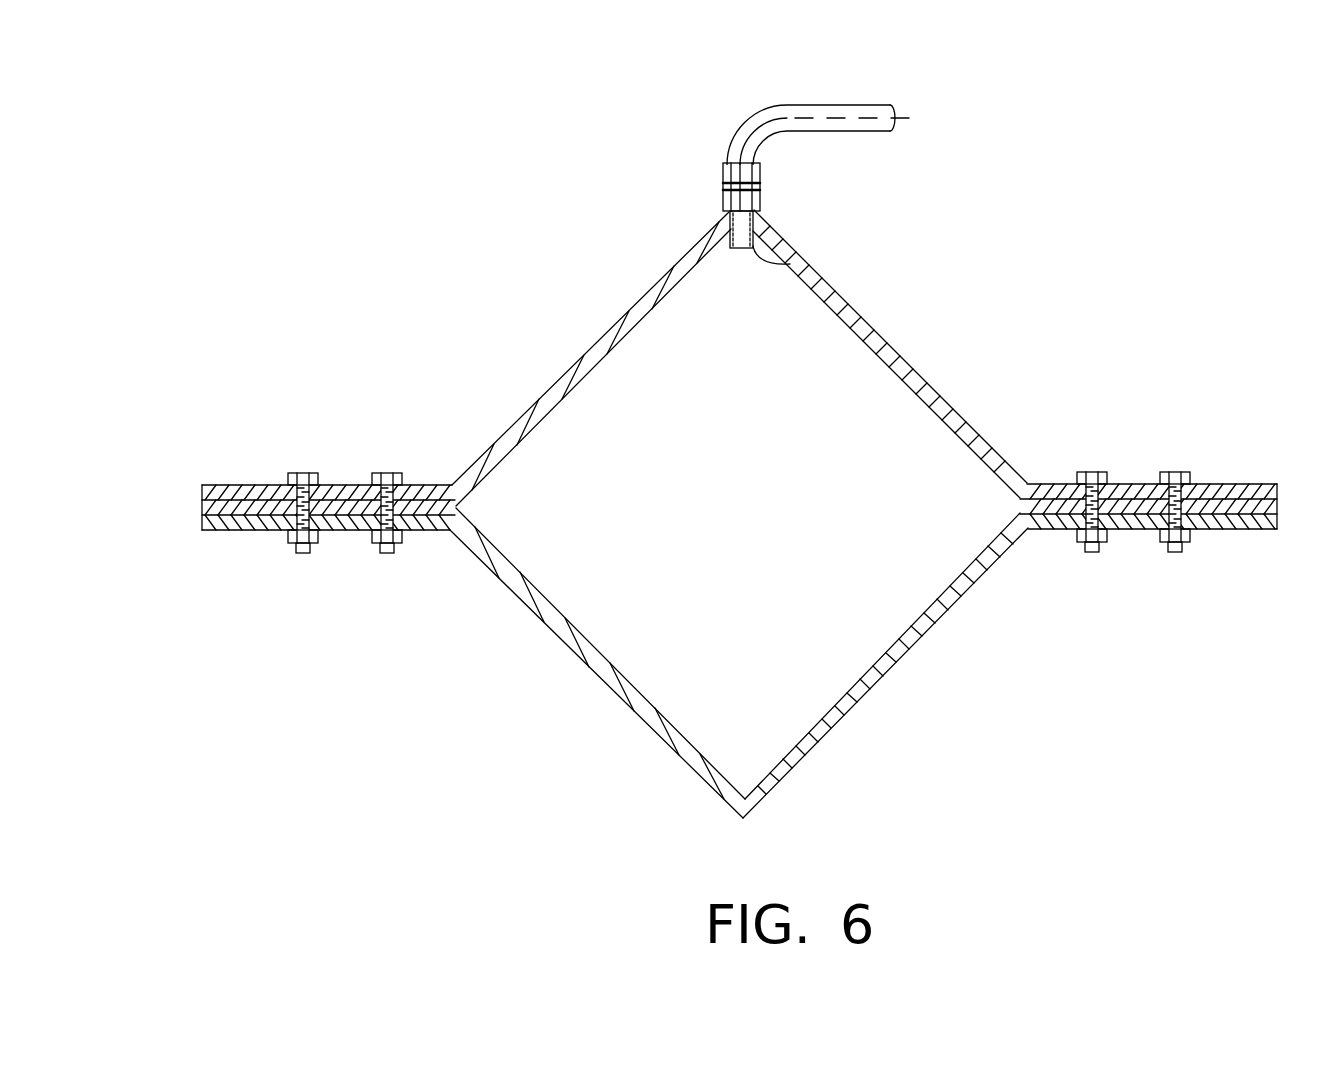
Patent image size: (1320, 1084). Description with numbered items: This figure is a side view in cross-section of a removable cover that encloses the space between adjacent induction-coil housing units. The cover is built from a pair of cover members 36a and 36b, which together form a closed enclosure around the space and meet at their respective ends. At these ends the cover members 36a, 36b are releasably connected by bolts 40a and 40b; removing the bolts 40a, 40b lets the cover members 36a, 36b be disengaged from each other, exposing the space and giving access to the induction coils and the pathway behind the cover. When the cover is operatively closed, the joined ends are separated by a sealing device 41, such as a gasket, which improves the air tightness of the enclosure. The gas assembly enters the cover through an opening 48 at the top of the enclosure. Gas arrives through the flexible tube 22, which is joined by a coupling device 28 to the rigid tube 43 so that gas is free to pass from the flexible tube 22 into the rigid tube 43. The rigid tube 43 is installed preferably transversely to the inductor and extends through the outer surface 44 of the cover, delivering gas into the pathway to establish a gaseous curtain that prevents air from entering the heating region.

The flexible tube 22 is at (800, 112).
The coupling device 28 is at (780, 184).
The opening 48 is at (755, 231).
The rigid tube 43 is at (792, 263).
The cover member 36a is at (876, 337).
The cover member 36b is at (880, 677).
The outer surface 44 is at (774, 514).
The bolt 40a is at (1187, 470).
The bolt 40b is at (303, 473).
The sealing device 41 is at (203, 509).